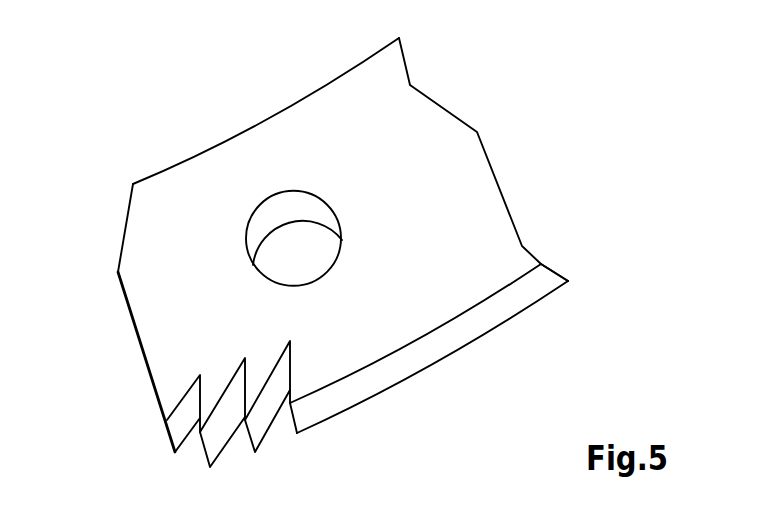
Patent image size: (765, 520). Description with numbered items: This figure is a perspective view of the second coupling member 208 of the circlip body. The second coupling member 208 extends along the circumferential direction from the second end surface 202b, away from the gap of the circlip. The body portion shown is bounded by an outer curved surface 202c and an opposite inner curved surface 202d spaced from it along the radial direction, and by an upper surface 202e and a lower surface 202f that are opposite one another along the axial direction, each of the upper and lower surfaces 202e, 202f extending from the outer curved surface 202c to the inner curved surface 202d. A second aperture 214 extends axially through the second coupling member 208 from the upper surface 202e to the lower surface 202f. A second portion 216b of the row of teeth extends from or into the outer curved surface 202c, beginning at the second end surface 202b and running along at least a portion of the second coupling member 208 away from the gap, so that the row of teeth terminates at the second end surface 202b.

The second coupling member 208 is at (355, 158).
The second end surface 202b is at (138, 343).
The outer curved surface 202c is at (382, 378).
The inner curved surface 202d is at (230, 140).
The upper surface 202e is at (437, 297).
The lower surface 202f is at (530, 312).
The second aperture 214 is at (288, 245).
The second portion of teeth 216b is at (268, 455).